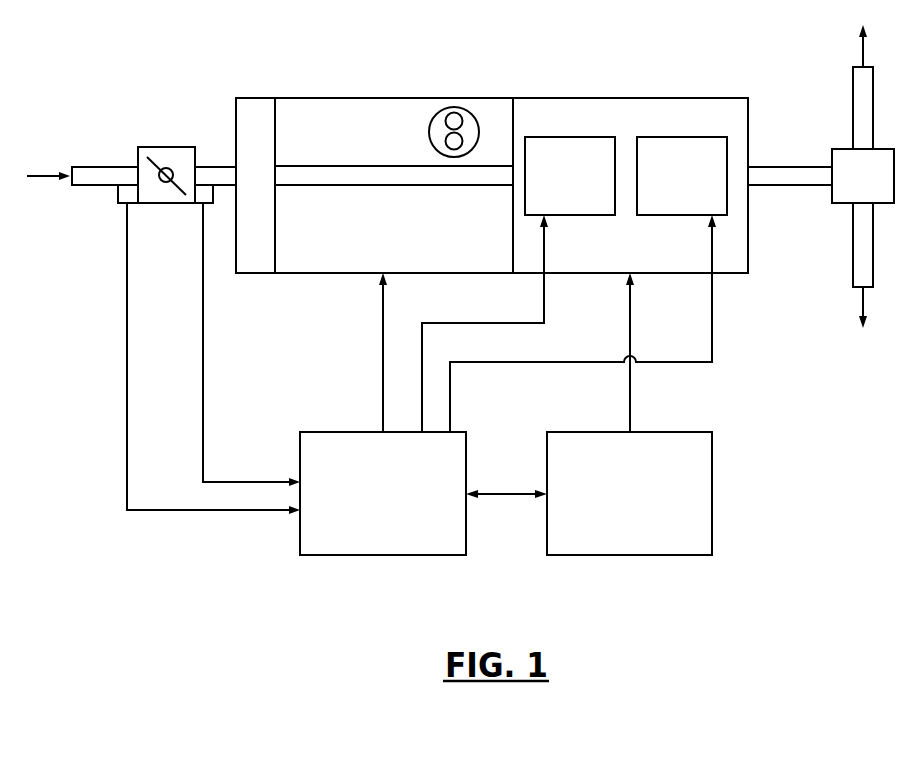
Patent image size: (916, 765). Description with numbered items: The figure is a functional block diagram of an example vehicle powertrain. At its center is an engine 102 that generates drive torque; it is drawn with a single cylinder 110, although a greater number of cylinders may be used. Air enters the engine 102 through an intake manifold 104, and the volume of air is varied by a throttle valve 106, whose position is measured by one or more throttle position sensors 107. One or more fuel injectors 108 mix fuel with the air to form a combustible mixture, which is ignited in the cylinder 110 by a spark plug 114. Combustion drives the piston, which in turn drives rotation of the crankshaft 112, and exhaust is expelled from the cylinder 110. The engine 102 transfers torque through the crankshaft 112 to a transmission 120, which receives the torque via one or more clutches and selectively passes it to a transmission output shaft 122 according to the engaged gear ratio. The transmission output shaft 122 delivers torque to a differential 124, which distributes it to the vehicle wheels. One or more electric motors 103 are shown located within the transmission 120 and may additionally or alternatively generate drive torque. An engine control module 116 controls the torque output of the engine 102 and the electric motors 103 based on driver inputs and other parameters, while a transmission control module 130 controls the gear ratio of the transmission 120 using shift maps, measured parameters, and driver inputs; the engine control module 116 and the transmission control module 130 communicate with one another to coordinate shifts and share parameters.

The engine 102 is at (382, 98).
The electrical motors 103 is at (570, 137).
The intake manifold 104 is at (257, 98).
The throttle valve 106 is at (157, 147).
The throttle position sensors 107 is at (117, 204).
The fuel injectors 108 is at (454, 112).
The cylinder 110 is at (429, 140).
The crankshaft 112 is at (392, 186).
The spark plug 114 is at (463, 140).
The engine control module 116 is at (355, 432).
The transmission 120 is at (627, 98).
The transmission output shaft 122 is at (810, 167).
The differential 124 is at (842, 149).
The transmission control module 130 is at (590, 432).